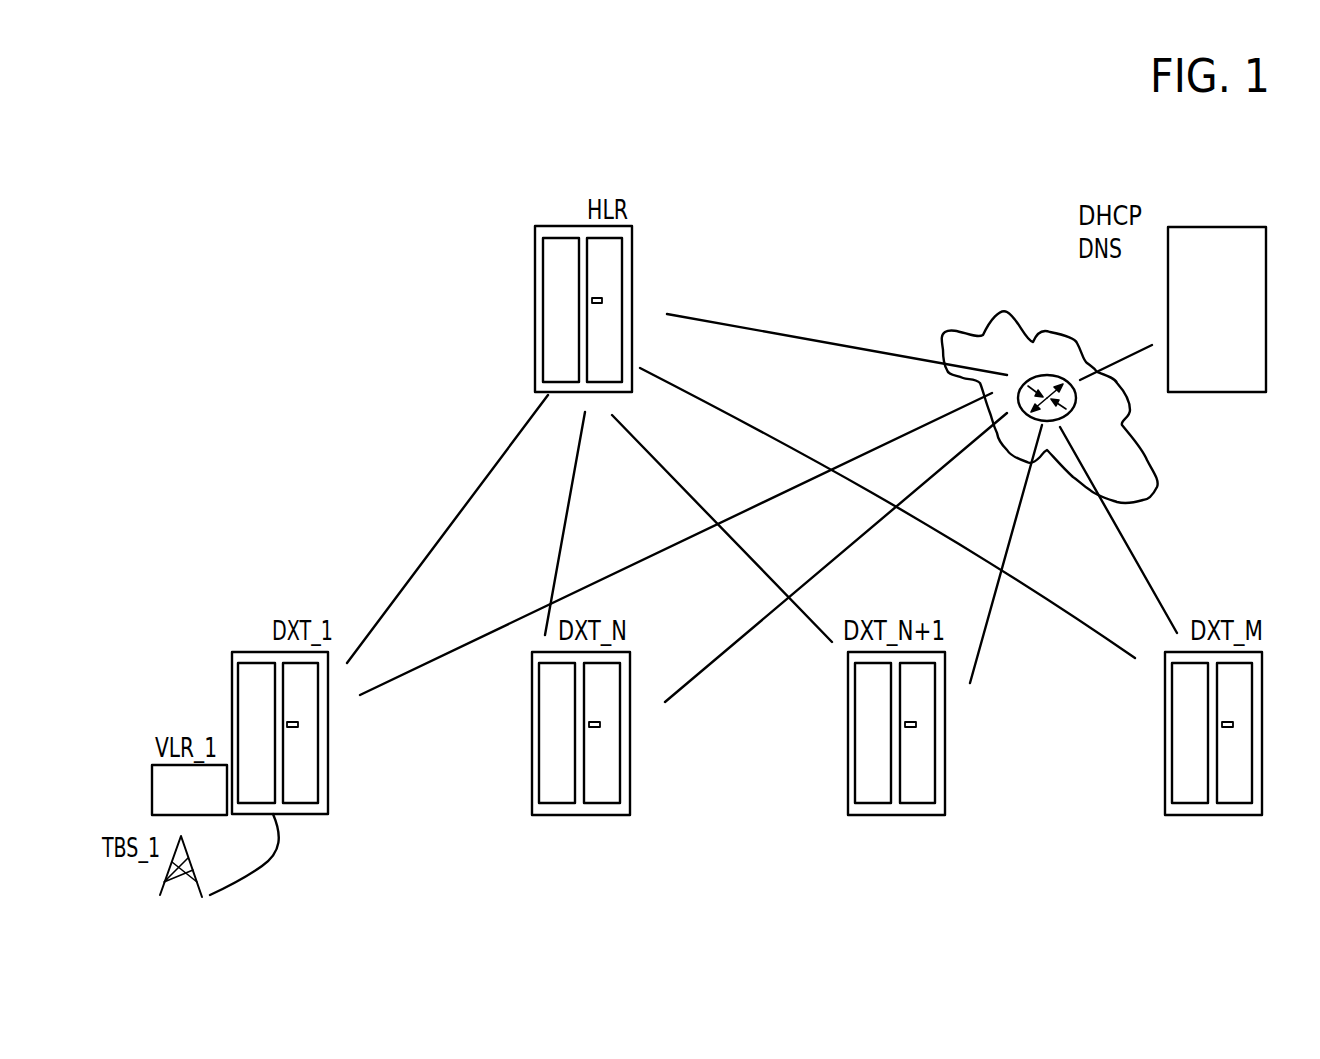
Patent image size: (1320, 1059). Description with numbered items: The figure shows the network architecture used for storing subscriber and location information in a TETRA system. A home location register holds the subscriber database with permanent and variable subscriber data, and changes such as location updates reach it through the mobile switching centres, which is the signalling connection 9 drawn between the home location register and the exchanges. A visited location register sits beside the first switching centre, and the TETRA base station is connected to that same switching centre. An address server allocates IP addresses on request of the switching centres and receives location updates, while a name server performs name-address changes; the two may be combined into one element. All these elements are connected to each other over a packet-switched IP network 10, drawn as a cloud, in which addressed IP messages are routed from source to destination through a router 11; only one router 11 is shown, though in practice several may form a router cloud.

The signalling connection between HLR and exchange 9 is at (483, 473).
The IP network 10 is at (1157, 482).
The router 11 is at (1068, 408).